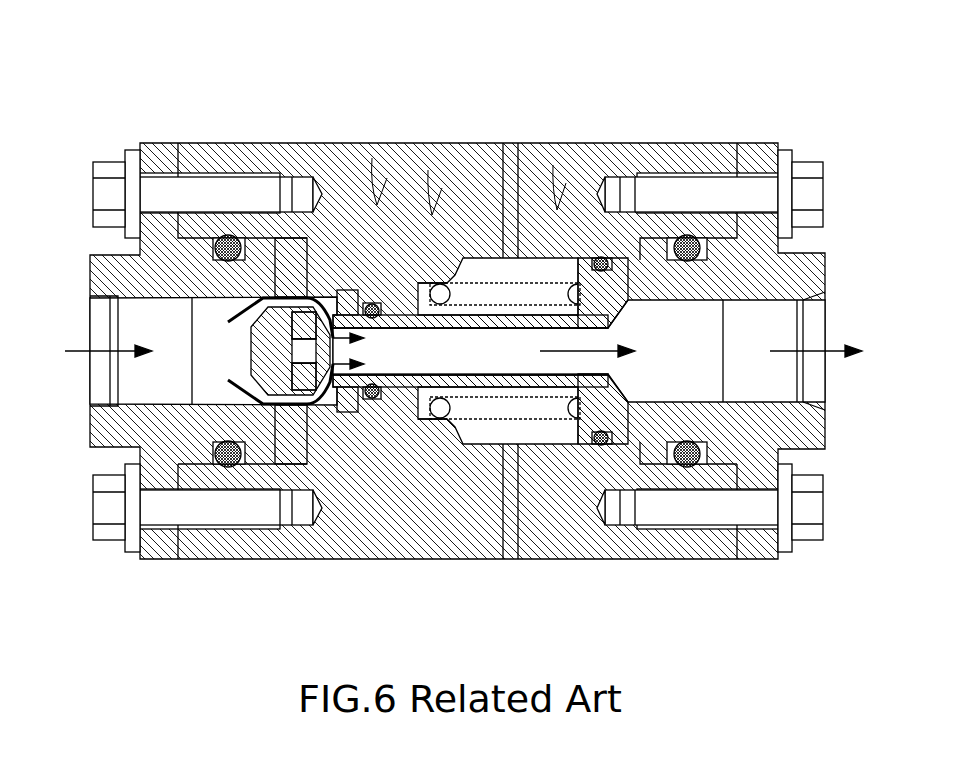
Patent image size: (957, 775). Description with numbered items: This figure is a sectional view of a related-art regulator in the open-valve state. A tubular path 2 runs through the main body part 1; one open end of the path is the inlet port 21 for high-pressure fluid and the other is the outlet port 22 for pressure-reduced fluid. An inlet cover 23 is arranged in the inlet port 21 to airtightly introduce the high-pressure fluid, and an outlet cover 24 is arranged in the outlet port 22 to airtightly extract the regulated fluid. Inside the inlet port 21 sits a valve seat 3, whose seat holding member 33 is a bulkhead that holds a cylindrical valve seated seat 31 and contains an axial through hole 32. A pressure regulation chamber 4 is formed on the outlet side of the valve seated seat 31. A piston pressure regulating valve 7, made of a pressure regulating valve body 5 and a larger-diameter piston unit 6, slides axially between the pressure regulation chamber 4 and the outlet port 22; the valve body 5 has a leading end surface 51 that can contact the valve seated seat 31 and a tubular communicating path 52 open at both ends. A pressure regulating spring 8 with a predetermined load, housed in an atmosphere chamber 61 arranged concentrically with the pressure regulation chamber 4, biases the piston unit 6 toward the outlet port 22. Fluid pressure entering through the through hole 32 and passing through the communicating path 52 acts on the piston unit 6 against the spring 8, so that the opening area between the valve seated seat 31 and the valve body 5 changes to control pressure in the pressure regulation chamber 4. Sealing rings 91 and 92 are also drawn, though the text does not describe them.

The main body part 1 is at (658, 163).
The tubular path 2 is at (340, 288).
The valve seat 3 is at (256, 298).
The pressure regulation chamber 4 is at (330, 407).
The pressure regulating valve body 5 is at (410, 310).
The piston unit 6 is at (610, 297).
The piston pressure regulating valve 7 is at (530, 300).
The pressure regulating spring 8 is at (515, 408).
The inlet port 21 is at (105, 365).
The outlet port 22 is at (818, 372).
The inlet cover 23 is at (100, 272).
The outlet cover 24 is at (822, 275).
The valve seated seat 31 is at (307, 392).
The through hole 32 is at (285, 292).
The seat holding member 33 is at (257, 362).
The leading end surface 51 is at (312, 318).
The communicating path 52 is at (447, 365).
The atmosphere chamber 61 is at (505, 272).
The O-ring 91 is at (373, 400).
The O-ring 92 is at (601, 447).